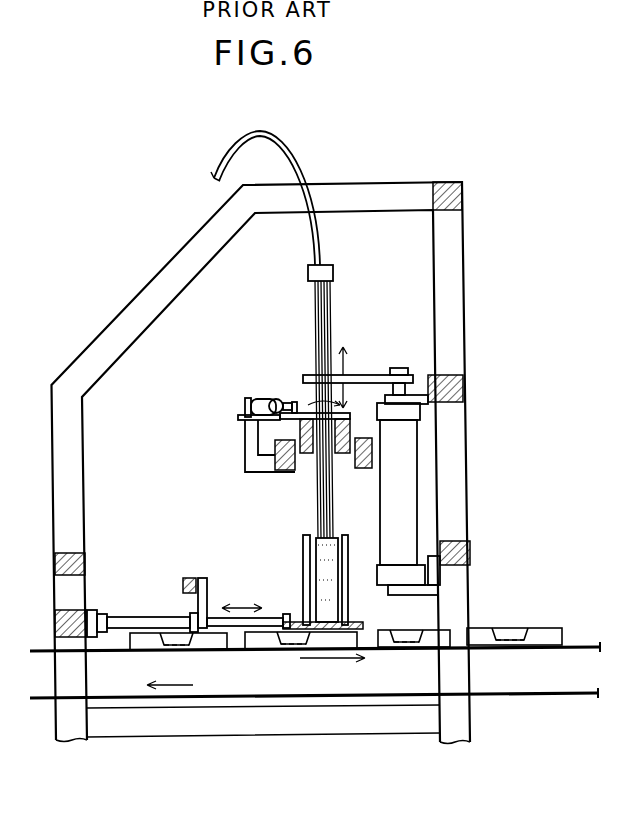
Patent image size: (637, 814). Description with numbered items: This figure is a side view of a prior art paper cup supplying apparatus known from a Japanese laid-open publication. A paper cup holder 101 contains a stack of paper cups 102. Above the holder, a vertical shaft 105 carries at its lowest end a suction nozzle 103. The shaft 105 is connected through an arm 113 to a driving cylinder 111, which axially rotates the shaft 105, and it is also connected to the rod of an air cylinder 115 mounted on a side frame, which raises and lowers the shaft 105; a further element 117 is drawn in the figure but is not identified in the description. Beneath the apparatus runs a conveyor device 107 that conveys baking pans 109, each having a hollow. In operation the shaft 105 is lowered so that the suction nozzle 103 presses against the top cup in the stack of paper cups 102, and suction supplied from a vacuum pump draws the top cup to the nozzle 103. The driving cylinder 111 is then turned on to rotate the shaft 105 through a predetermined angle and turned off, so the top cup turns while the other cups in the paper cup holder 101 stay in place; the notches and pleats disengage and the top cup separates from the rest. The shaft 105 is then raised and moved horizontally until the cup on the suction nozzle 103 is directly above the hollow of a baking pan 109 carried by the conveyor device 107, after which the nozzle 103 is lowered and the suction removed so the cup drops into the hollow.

The paper cup holder 101 is at (303, 572).
The stack of paper cups 102 is at (320, 590).
The suction nozzle 103 is at (332, 545).
The shaft 105 is at (342, 486).
The conveyor device 107 is at (112, 652).
The baking pan 109 is at (524, 628).
The driving cylinder 111 is at (258, 395).
The arm 113 is at (292, 413).
The air cylinder 115 is at (418, 489).
The arm 117 is at (371, 375).